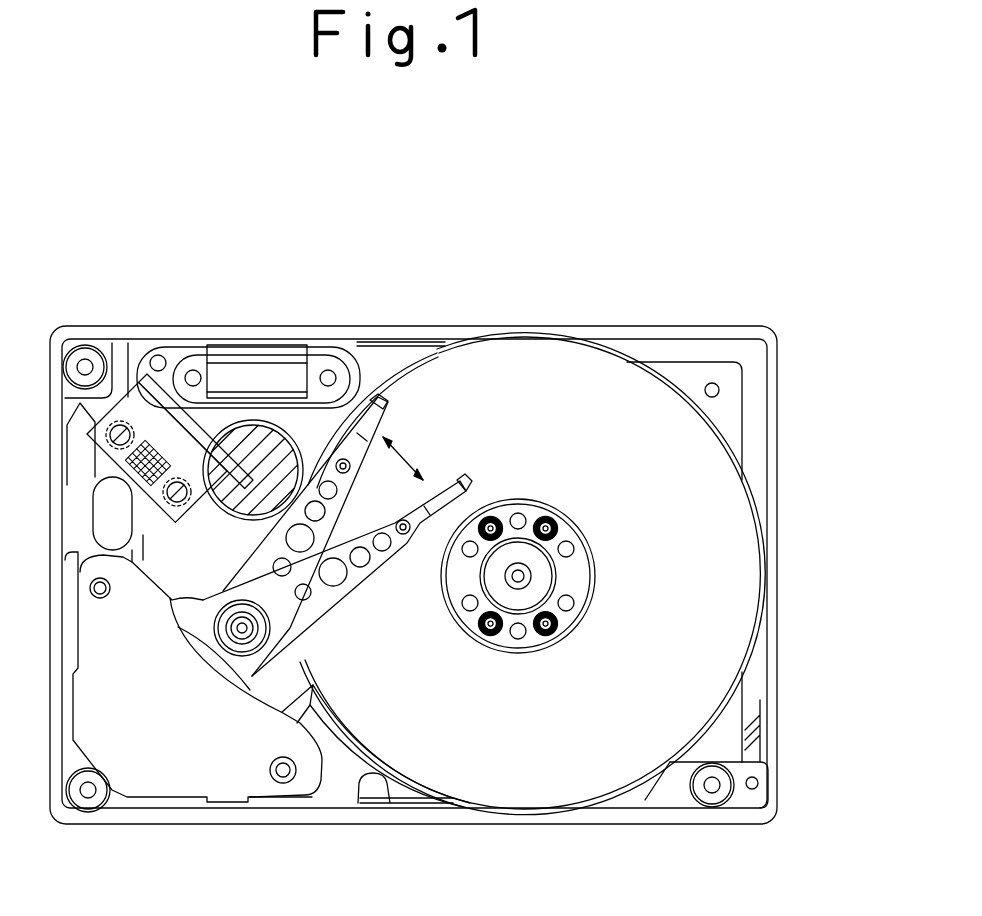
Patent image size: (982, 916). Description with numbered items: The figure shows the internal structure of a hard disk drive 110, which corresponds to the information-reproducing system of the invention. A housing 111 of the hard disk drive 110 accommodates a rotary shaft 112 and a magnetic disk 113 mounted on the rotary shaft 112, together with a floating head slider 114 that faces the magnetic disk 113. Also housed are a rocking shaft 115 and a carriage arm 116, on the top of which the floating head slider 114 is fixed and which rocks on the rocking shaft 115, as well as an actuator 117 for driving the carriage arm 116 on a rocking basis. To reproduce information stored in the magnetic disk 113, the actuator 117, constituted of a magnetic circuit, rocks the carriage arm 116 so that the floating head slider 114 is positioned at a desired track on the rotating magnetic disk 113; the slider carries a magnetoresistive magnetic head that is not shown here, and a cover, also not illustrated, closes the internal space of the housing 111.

The hard disk drive 110 is at (585, 212).
The housing 111 is at (629, 325).
The rotary shaft 112 is at (542, 583).
The magnetic disk 113 is at (720, 528).
The floating head slider 114 is at (449, 490).
The rocking shaft 115 is at (242, 640).
The carriage arm 116 is at (320, 603).
The actuator 117 is at (160, 777).